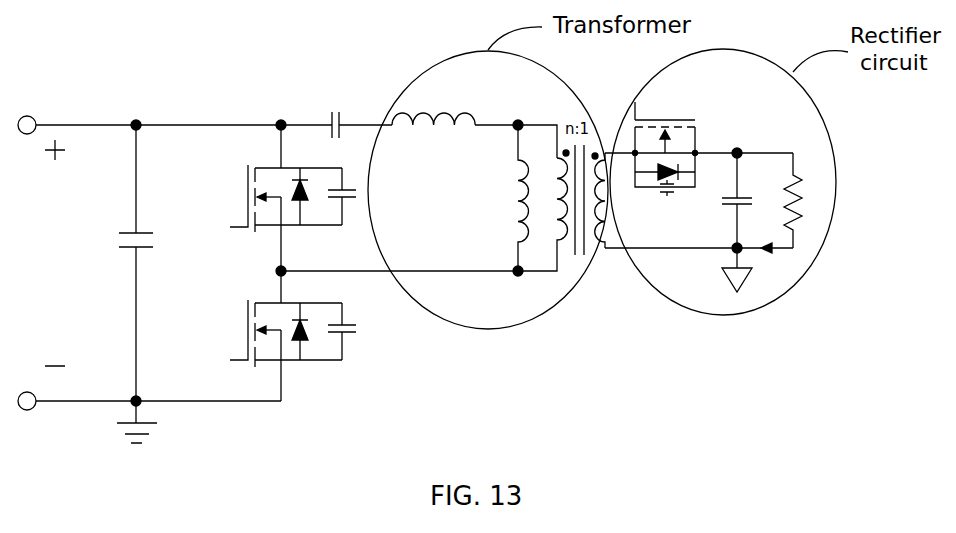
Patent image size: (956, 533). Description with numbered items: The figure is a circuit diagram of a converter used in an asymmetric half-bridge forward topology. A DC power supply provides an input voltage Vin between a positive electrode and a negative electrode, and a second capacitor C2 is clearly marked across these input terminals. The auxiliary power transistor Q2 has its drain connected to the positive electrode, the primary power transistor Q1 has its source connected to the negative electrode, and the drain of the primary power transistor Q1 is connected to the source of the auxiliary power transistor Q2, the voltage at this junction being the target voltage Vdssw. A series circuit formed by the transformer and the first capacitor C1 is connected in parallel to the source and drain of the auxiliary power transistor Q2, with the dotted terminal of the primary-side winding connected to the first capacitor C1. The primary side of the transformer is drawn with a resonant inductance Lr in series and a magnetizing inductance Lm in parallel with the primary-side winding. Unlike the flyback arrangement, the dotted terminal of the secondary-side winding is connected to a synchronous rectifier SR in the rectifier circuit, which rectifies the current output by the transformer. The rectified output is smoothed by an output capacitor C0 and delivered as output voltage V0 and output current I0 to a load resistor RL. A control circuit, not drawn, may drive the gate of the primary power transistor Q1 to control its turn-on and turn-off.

The first capacitor C1 is at (335, 110).
The second capacitor C2 is at (121, 263).
The primary power transistor Q1 is at (278, 336).
The auxiliary power transistor Q2 is at (278, 198).
The resonant inductor Lr is at (433, 142).
The magnetizing inductor Lm is at (501, 198).
The synchronous rectifier SR is at (665, 164).
The output capacitor C0 is at (720, 200).
The load resistor RL is at (804, 200).
The voltage output by the DC power supply Vin is at (49, 246).
The target voltage Vdssw is at (236, 274).
The output voltage V0 is at (779, 139).
The output current I0 is at (783, 276).